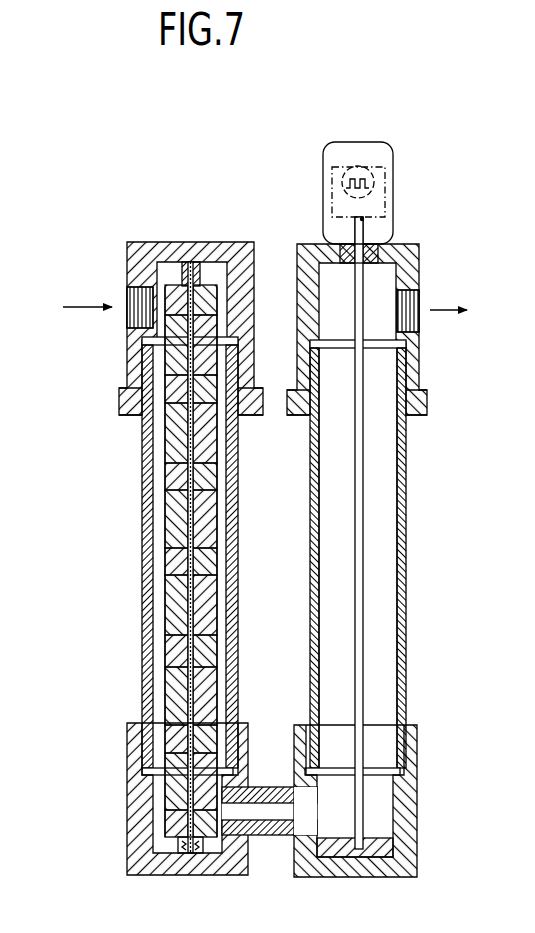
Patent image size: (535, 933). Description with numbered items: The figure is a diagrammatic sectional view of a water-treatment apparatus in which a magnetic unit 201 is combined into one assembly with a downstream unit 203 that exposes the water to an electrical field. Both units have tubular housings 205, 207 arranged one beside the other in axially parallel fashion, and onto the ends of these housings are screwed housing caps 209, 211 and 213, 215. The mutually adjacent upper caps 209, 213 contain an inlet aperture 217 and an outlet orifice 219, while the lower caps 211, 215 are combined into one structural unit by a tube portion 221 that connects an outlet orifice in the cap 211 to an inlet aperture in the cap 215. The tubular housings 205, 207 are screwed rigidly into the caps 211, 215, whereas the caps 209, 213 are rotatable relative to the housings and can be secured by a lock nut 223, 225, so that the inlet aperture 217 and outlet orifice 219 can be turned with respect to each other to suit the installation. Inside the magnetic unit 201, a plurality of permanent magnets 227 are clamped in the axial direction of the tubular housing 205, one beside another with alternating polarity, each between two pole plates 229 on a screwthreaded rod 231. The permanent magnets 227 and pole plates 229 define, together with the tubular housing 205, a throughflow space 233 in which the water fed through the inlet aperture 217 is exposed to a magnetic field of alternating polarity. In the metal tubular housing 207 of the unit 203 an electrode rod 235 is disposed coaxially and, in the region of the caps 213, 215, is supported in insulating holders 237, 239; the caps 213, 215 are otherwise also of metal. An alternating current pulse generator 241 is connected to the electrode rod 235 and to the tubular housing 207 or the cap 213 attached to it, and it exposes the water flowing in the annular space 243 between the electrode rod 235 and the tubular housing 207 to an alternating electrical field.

The magnetic unit 201 is at (128, 580).
The unit 203 is at (428, 566).
The tubular housing 205 is at (148, 526).
The tubular housing 207 is at (406, 492).
The housing cap 209 is at (128, 263).
The housing cap 211 is at (135, 845).
The housing cap 213 is at (415, 270).
The housing cap 215 is at (418, 808).
The inlet aperture 217 is at (130, 318).
The outlet orifice 219 is at (414, 322).
The tube portion 221 is at (263, 836).
The lock nut 223 is at (122, 416).
The lock nut 225 is at (426, 416).
The permanent magnets 227 is at (210, 520).
The pole plates 229 is at (170, 482).
The screwthreaded rod 231 is at (178, 692).
The throughflow space 233 is at (160, 628).
The electrode rod 235 is at (359, 638).
The insulating holder 237 is at (364, 232).
The insulating holder 239 is at (400, 862).
The alternating current pulse generator 241 is at (392, 158).
The annular space 243 is at (385, 690).